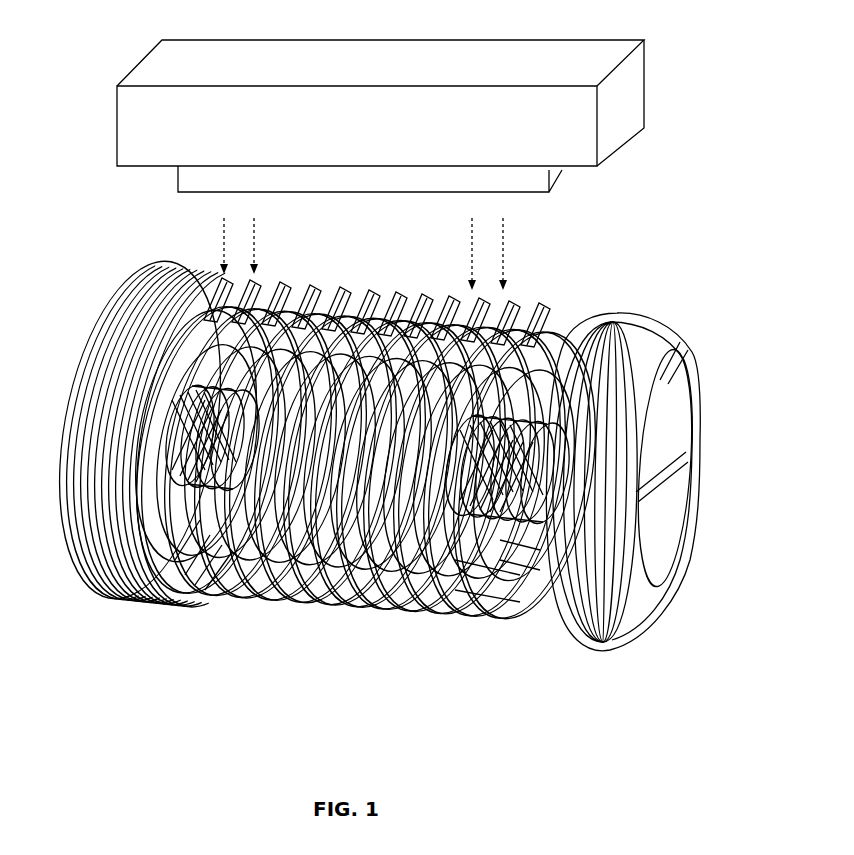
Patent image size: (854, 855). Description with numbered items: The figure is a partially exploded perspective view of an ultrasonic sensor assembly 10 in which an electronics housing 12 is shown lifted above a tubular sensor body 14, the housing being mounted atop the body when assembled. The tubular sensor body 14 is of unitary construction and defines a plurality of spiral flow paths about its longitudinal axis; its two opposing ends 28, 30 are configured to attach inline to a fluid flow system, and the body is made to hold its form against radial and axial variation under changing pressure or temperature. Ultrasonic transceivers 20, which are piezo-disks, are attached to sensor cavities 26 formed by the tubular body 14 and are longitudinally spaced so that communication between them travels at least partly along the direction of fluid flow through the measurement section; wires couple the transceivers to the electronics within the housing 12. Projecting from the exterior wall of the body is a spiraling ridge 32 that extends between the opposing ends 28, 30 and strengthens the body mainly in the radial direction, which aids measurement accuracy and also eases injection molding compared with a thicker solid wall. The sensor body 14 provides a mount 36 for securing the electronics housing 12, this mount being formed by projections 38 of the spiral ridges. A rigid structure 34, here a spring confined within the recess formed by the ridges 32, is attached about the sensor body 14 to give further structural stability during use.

The ultrasonic sensor assembly 10 is at (97, 43).
The electronics housing 12 is at (574, 137).
The tubular sensor body 14 is at (637, 519).
The ultrasonic transceivers 20 is at (150, 598).
The sensor cavities 26 is at (205, 590).
The opposing end 28 is at (70, 364).
The opposing end 30 is at (662, 529).
The spiraling ridge 32 is at (480, 612).
The rigid structure 34 is at (518, 605).
The mount 36 is at (387, 447).
The projections 38 is at (385, 287).